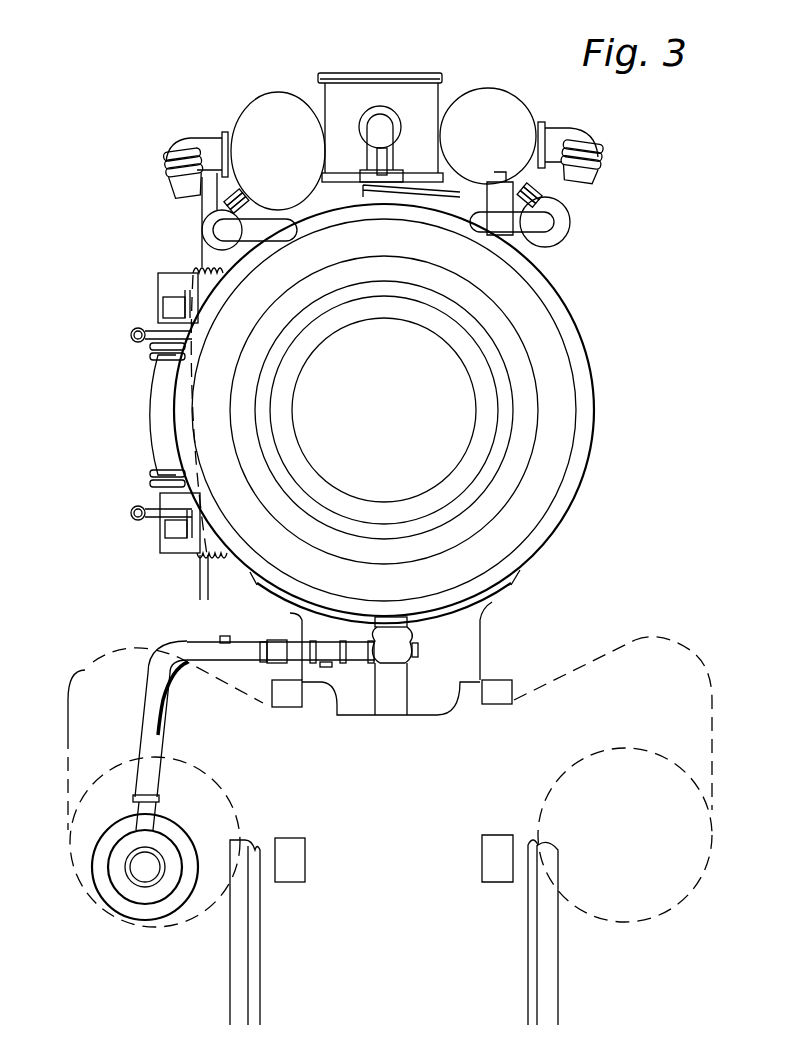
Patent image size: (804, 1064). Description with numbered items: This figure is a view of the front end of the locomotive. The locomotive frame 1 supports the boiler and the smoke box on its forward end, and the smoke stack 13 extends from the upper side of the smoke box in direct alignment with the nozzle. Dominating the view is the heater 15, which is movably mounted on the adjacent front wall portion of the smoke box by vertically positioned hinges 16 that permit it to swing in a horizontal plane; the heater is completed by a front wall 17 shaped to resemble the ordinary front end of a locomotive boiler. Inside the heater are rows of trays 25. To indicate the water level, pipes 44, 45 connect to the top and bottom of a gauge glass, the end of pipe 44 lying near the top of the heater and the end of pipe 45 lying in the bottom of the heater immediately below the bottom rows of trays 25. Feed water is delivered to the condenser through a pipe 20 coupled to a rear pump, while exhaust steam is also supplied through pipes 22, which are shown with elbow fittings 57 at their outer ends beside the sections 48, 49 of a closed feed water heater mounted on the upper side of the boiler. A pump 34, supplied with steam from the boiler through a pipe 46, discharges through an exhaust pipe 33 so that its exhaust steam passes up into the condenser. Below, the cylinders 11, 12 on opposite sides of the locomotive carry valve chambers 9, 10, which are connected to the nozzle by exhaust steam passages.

The locomotive frame 1 is at (305, 860).
The valve chamber 9 is at (85, 670).
The valve chamber 10 is at (700, 668).
The cylinder 11 is at (70, 830).
The cylinder 12 is at (712, 836).
The smoke stack 13 is at (430, 95).
The heater 15 is at (565, 318).
The hinges 16 is at (158, 302).
The front wall 17 is at (384, 410).
The pipe 20 is at (388, 125).
The pipes 22 is at (222, 231).
The trays 25 is at (385, 157).
The exhaust pipe 33 is at (150, 700).
The pump 34 is at (185, 840).
The pipe 44 is at (131, 337).
The pipe 45 is at (131, 513).
The pipe 46 is at (199, 575).
The section 48 is at (278, 151).
The section 49 is at (488, 136).
The elbow pipe 57 is at (186, 185).